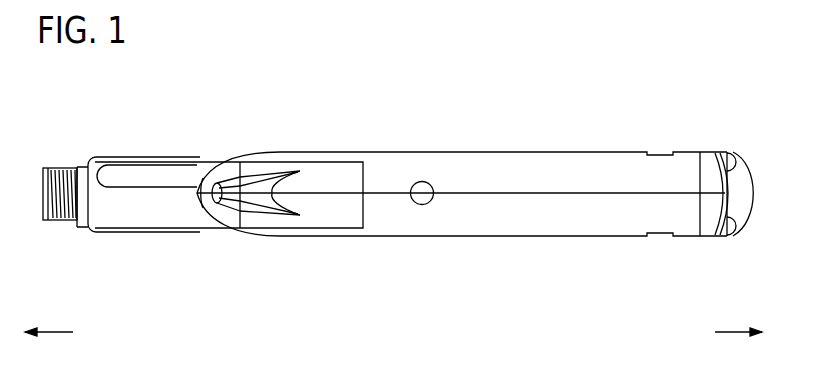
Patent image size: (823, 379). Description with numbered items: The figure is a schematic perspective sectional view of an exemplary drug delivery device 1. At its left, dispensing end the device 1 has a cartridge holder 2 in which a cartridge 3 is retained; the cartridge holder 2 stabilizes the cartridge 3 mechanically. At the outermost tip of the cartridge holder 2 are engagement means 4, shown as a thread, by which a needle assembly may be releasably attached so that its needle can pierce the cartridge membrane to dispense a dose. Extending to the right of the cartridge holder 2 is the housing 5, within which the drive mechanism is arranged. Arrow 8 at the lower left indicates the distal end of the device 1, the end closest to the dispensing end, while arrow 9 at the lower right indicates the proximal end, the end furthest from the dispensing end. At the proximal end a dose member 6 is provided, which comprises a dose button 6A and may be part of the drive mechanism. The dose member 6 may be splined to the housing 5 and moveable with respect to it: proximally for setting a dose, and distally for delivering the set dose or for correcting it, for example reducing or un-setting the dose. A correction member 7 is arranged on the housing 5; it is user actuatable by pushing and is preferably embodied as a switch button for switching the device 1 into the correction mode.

The drug delivery device 1 is at (383, 146).
The cartridge holder 2 is at (155, 232).
The cartridge 3 is at (168, 173).
The engagement means 4 is at (63, 168).
The housing 5 is at (545, 212).
The dose member 6 is at (717, 151).
The dose button 6A is at (742, 234).
The correction member 7 is at (422, 193).
The arrow indicating distal end 8 is at (49, 342).
The arrow indicating proximal end 9 is at (738, 342).